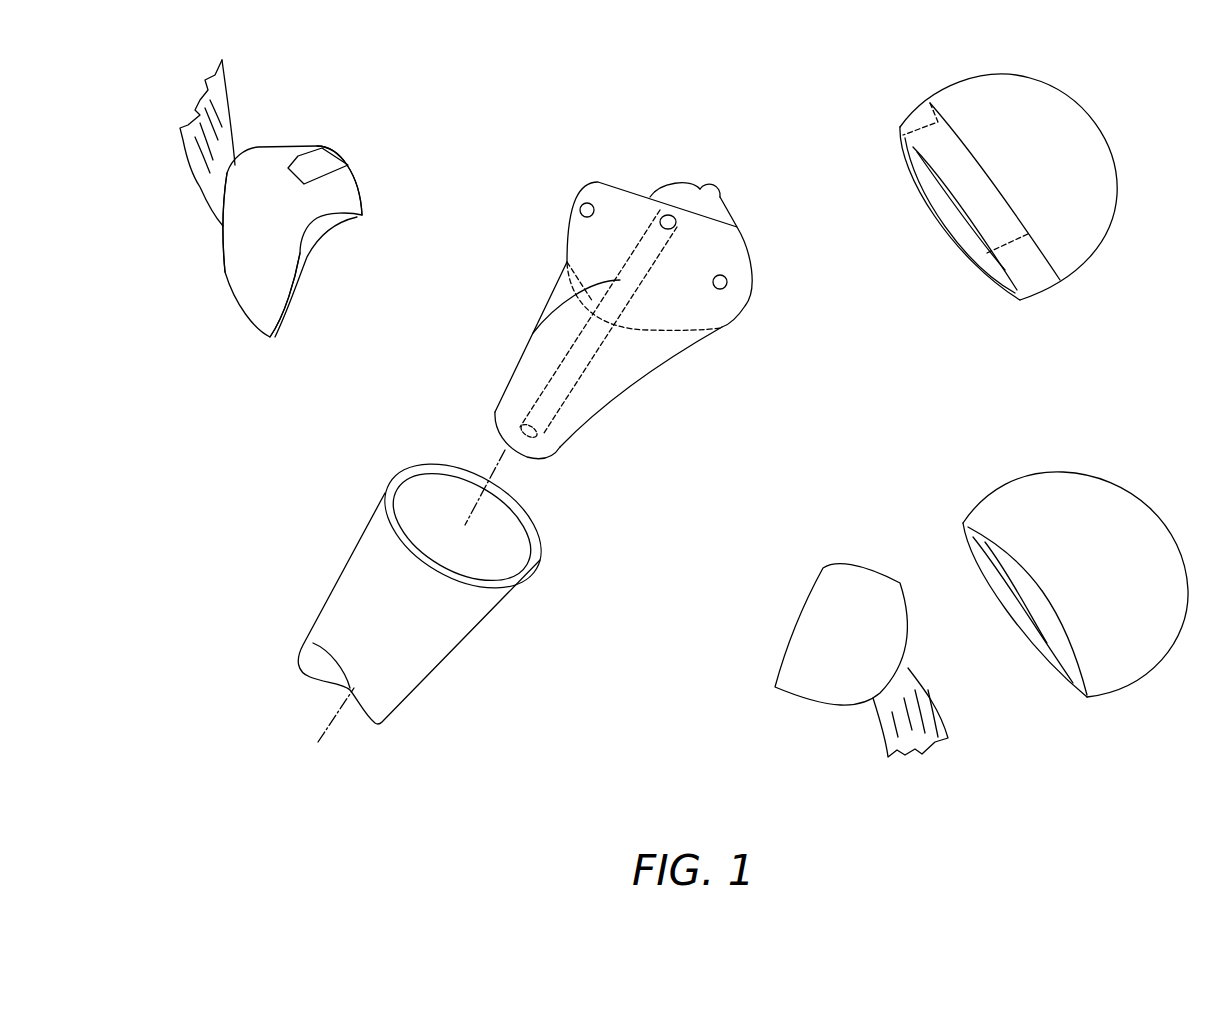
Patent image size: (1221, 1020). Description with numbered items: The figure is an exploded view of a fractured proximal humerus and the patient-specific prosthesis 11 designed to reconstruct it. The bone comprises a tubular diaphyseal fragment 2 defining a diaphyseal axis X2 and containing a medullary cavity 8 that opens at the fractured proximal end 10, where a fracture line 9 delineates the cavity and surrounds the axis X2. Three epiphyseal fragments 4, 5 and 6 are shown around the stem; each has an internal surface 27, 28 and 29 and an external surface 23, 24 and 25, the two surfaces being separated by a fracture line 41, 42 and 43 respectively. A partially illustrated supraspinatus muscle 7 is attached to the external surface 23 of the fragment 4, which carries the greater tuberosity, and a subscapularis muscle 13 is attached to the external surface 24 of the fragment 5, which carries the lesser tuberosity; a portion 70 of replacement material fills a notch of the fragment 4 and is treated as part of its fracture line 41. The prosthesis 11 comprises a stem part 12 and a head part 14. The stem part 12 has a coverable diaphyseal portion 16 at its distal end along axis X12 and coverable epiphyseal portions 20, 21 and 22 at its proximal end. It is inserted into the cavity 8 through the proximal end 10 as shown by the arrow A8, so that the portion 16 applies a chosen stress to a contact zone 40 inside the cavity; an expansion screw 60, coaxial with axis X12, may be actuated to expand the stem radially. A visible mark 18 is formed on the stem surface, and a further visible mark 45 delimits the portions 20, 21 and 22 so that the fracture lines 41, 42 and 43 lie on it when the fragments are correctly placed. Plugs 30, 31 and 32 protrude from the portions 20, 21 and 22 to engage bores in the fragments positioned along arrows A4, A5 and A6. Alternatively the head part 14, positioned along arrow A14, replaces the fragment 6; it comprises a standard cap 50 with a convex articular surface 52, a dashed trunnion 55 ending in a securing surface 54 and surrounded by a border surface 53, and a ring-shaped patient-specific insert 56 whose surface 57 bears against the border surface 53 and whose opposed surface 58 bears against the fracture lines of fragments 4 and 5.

The diaphyseal fragment 2 is at (445, 642).
The epiphyseal fragment 4 is at (283, 283).
The epiphyseal fragment 5 is at (822, 590).
The epiphyseal fragment 6 is at (1002, 513).
The supraspinatus muscle 7 is at (217, 117).
The medullary cavity 8 is at (512, 548).
The fracture line 9 is at (528, 567).
The proximal end 10 is at (370, 550).
The prosthesis 11 is at (888, 121).
The stem part 12 is at (613, 385).
The subscapularis muscle 13 is at (892, 720).
The head part 14 is at (1097, 233).
The coverable diaphyseal portion 16 is at (500, 397).
The visible mark 18 is at (533, 333).
The coverable epiphyseal portion 20 is at (620, 197).
The coverable epiphyseal portion 21 is at (742, 267).
The coverable epiphyseal portion 22 is at (677, 193).
The external surface 23 is at (232, 255).
The external surface 24 is at (815, 688).
The external surface 25 is at (1132, 518).
The internal surface 27 is at (320, 262).
The internal surface 28 is at (803, 628).
The internal surface 29 is at (1004, 572).
The plug 30 is at (570, 207).
The plug 31 is at (712, 300).
The plug 32 is at (708, 188).
The contact zone 40 is at (414, 498).
The fracture line 41 is at (363, 195).
The fracture line 42 is at (782, 677).
The fracture line 43 is at (1047, 633).
The visible mark 45 is at (620, 280).
The standard cap 50 is at (1028, 97).
The articular surface 52 is at (1102, 177).
The border surface 53 is at (1048, 277).
The securing surface 54 is at (935, 182).
The trunnion 55 is at (898, 128).
The patient-specific insert 56 is at (1013, 277).
The surface 57 is at (998, 172).
The surface 58 is at (973, 217).
The expansion screw 60 is at (690, 222).
The portion of replacement material 70 is at (322, 163).
The arrow A4 is at (545, 214).
The arrow A5 is at (732, 303).
The arrow A6 is at (1010, 462).
The arrow A8 is at (490, 447).
The arrow A14 is at (897, 177).
The diaphyseal axis X2 is at (338, 712).
The stem axis X12 is at (513, 455).